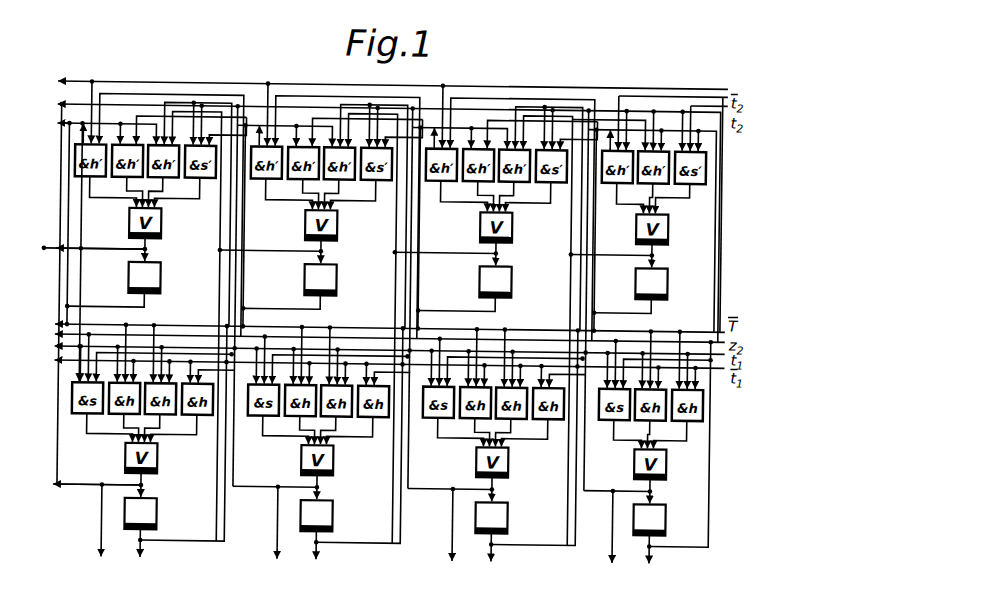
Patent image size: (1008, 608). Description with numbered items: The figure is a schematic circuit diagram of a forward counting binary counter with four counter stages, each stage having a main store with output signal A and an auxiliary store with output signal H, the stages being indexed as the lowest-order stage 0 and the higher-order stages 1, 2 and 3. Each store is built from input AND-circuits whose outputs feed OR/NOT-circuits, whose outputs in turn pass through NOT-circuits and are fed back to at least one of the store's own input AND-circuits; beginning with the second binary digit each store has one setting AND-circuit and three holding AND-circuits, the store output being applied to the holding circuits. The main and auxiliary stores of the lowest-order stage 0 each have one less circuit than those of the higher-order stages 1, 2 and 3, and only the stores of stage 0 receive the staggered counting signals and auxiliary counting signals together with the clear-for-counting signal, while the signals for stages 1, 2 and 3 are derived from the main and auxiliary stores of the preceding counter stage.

The bit 3 stage (SH3, H3, SA3, A3) 3 is at (142, 336).
The bit 2 stage (SH2, H2, SA2, A2) 2 is at (318, 338).
The bit 1 stage (SH1, H1, SA1, A1) 1 is at (493, 340).
The bit 0 stage (SH0, H0, SA0, A0) 0 is at (640, 353).